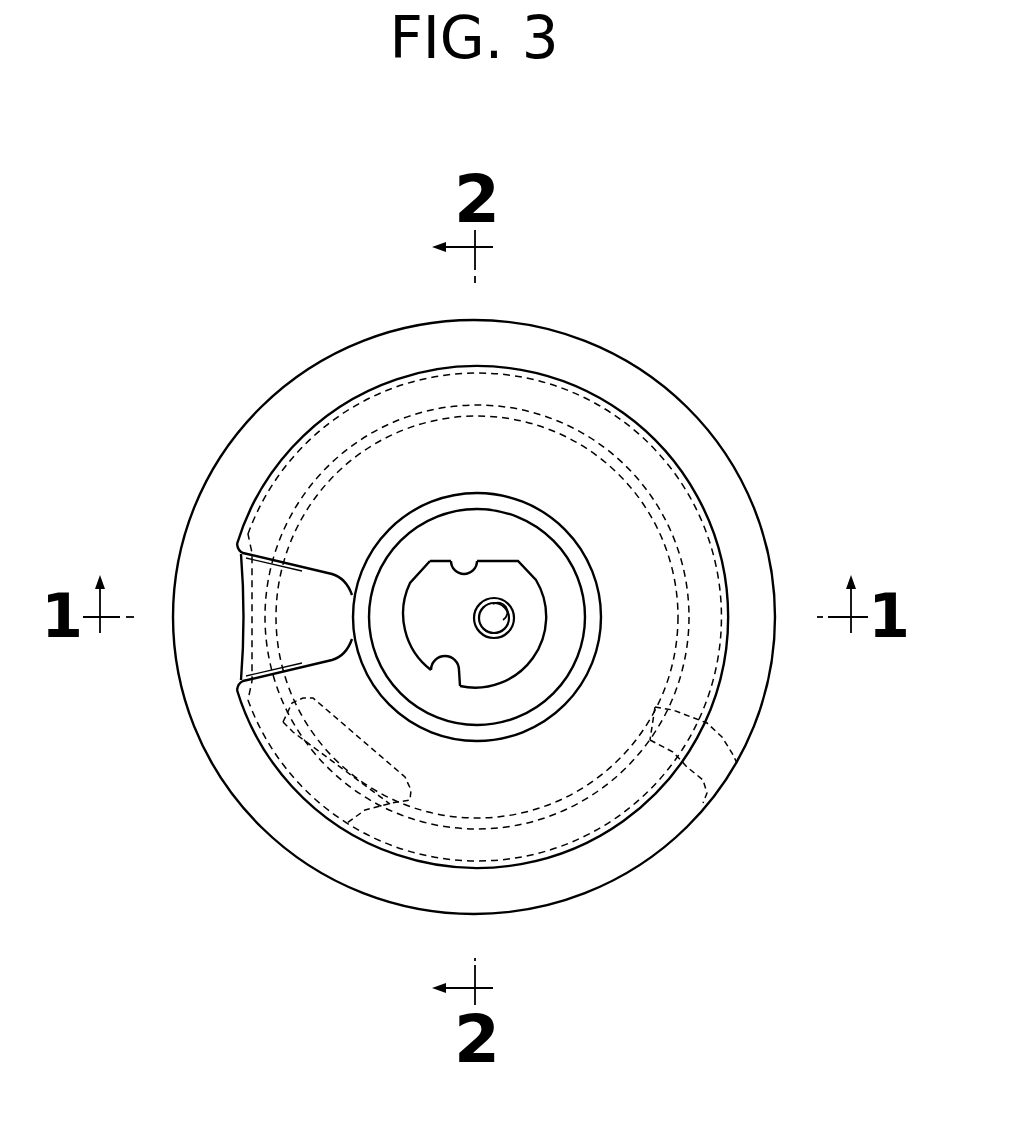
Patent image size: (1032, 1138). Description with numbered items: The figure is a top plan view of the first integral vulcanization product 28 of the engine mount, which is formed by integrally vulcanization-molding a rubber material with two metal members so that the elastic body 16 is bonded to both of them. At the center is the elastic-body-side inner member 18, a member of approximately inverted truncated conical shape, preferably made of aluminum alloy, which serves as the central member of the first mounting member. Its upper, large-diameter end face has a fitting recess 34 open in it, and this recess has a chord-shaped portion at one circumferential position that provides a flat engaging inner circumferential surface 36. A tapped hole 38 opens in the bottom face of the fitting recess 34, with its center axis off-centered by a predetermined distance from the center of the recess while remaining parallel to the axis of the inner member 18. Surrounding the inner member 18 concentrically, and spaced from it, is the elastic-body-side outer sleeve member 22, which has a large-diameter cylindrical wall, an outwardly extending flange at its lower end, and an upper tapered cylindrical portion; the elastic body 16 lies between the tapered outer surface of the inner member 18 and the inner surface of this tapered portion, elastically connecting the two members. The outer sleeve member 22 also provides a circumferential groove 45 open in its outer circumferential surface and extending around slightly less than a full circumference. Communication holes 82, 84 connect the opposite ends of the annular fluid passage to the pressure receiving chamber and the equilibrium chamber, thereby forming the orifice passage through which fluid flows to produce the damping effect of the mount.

The elastic body 16 is at (578, 473).
The elastic-body-side inner member 18 is at (482, 672).
The elastic-body-side outer sleeve member 22 is at (740, 765).
The first integral vulcanization product 28 is at (601, 330).
The fitting recess 34 is at (458, 670).
The engaging inner circumferential surface 36 is at (452, 560).
The tapped hole 38 is at (513, 618).
The circumferential groove 45 is at (705, 802).
The communication hole 82 is at (243, 652).
The communication hole 84 is at (347, 823).